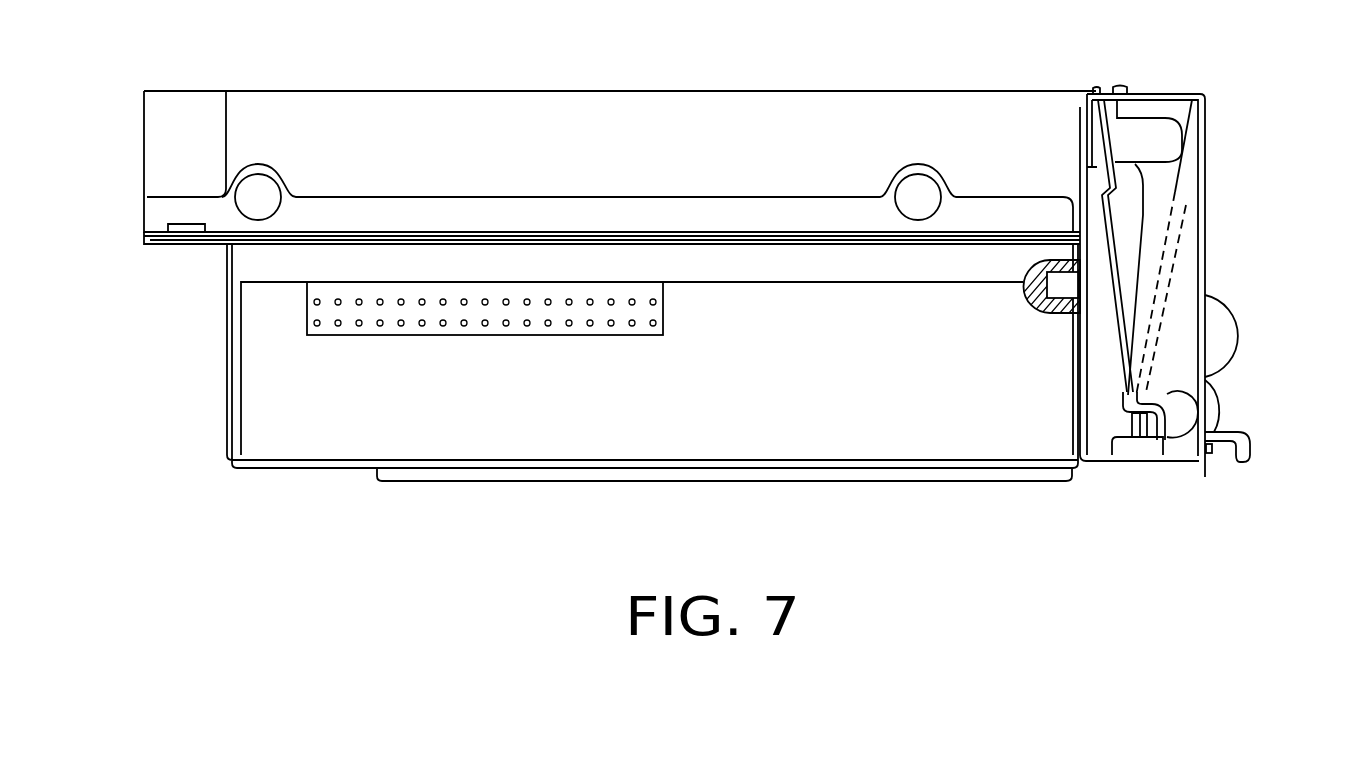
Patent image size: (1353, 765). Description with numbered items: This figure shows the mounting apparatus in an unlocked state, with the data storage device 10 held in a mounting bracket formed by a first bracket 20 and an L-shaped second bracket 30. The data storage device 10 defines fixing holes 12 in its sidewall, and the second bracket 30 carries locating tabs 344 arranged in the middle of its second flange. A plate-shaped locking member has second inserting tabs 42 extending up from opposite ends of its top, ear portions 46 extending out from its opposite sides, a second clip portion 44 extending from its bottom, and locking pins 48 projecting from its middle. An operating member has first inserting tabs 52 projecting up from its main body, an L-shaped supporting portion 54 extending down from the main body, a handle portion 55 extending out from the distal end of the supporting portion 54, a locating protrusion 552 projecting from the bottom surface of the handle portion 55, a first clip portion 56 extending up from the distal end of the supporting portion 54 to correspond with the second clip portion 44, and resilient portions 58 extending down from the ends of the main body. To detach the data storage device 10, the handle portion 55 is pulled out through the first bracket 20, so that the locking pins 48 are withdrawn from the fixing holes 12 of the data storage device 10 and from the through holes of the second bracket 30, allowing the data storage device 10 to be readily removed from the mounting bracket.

The data storage device 10 is at (286, 379).
The fixing holes 12 is at (1060, 290).
The first bracket 20 is at (494, 128).
The second bracket 30 is at (163, 212).
The second inserting tabs 42 is at (1097, 88).
The second clip portion 44 is at (1145, 425).
The ear portions 46 is at (1213, 345).
The locking pins 48 is at (1092, 283).
The first inserting tabs 52 is at (1118, 86).
The supporting portion 54 is at (1210, 410).
The handle portion 55 is at (1245, 448).
The first clip portion 56 is at (1133, 425).
The resilient portions 58 is at (1178, 206).
The locating tabs 344 is at (1122, 447).
The locating protrusion 552 is at (1212, 455).